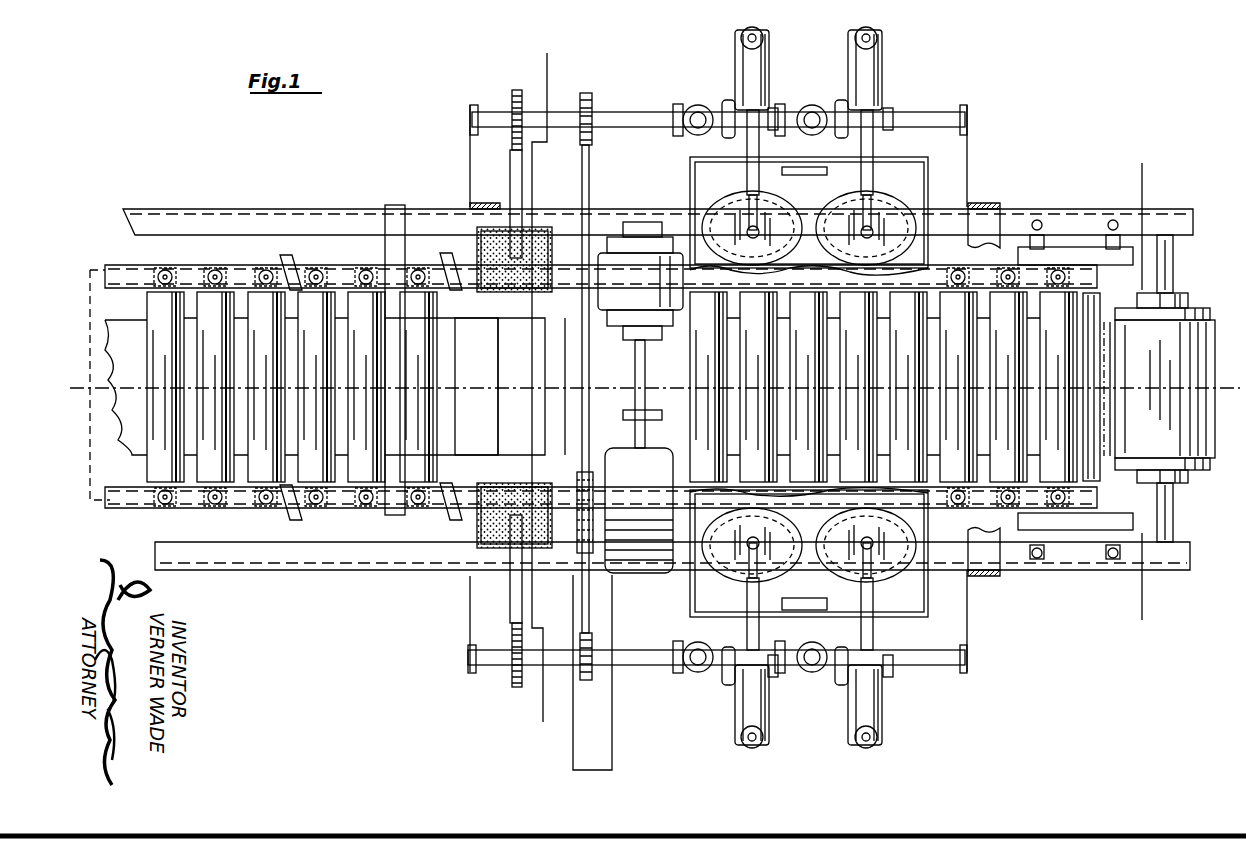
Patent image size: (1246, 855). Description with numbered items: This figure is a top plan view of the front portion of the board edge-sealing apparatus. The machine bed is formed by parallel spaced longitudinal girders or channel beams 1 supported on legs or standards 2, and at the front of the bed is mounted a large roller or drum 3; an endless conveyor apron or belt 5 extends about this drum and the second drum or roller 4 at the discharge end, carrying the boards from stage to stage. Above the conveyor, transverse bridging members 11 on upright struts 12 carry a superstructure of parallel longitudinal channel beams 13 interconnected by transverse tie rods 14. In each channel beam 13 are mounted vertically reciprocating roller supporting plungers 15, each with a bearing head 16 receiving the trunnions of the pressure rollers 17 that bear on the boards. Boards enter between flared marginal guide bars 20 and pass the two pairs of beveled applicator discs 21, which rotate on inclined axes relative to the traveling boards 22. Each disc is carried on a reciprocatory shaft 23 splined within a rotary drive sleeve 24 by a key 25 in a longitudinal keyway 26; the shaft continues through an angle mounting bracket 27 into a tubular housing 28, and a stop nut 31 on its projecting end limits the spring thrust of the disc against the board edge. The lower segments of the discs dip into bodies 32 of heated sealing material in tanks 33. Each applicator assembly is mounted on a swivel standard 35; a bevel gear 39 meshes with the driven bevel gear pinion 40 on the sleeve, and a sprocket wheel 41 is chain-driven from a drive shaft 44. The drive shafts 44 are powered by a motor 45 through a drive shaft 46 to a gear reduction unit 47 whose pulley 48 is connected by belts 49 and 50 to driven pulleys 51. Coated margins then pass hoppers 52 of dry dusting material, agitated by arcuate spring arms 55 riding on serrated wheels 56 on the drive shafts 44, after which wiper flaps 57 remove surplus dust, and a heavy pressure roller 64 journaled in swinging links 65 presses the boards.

The longitudinal girders or channel beams 1 is at (252, 230).
The legs or standards 2 is at (73, 390).
The roller or drum 3 is at (1145, 181).
The second drum or roller 4 is at (549, 60).
The endless conveyor apron or belt 5 is at (130, 440).
The transverse bridging members 11 is at (982, 215).
The upright struts 12 is at (1000, 212).
The longitudinal channel beams 13 is at (780, 492).
The transverse tie rods 14 is at (1100, 440).
The roller supporting plungers 15 is at (215, 270).
The bearing head 16 is at (150, 262).
The pressure rollers 17 is at (158, 308).
The marginal guide bars 20 is at (1175, 262).
The beveled applicator discs 21 is at (790, 230).
The traveling boards 22 is at (802, 258).
The reciprocatory shafts 23 is at (748, 215).
The rotary drive sleeve 24 is at (747, 150).
The key 25 is at (757, 205).
The longitudinal keyway 26 is at (792, 167).
The angle mounting bracket 27 is at (726, 100).
The tubular housing 28 is at (768, 78).
The stop nut 31 is at (765, 32).
The bodies of sealing material 32 is at (920, 192).
The tanks 33 is at (930, 170).
The swivel standard 35 is at (696, 105).
The bevel gear 39 is at (740, 130).
The driven bevel gear pinion 40 is at (772, 110).
The sprocket wheel 41 is at (673, 128).
The drive shaft 44 is at (625, 120).
The motor 45 is at (640, 281).
The drive shaft 46 is at (635, 384).
The gear reduction unit 47 is at (639, 510).
The pulley 48 is at (578, 550).
The belt 49 is at (590, 186).
The belt 50 is at (595, 604).
The driven pulleys 51 is at (592, 120).
The hoppers 52 is at (530, 227).
The arcuate spring arms 55 is at (510, 172).
The serrated wheels 56 is at (513, 100).
The wiper flaps 57 is at (300, 255).
The heavy pressure roller 64 is at (498, 408).
The swinging links 65 is at (465, 320).